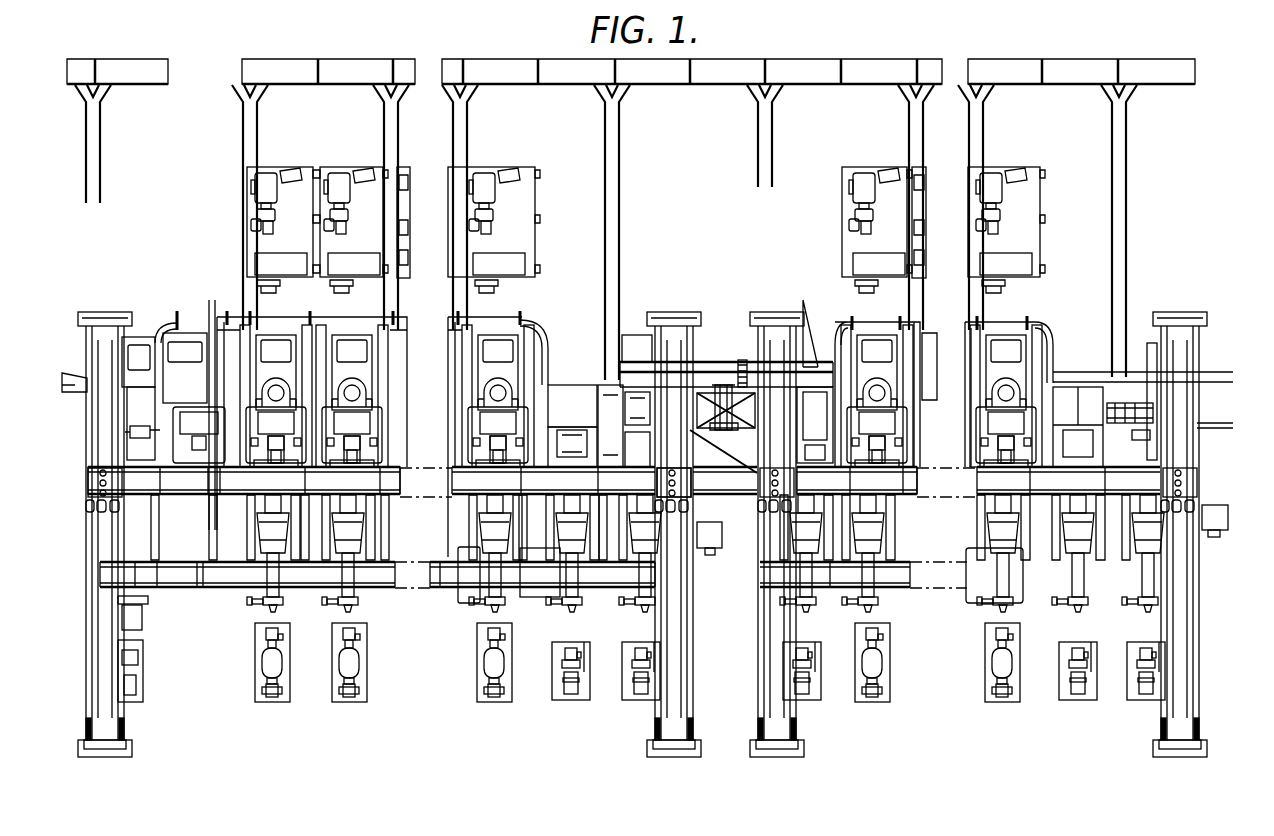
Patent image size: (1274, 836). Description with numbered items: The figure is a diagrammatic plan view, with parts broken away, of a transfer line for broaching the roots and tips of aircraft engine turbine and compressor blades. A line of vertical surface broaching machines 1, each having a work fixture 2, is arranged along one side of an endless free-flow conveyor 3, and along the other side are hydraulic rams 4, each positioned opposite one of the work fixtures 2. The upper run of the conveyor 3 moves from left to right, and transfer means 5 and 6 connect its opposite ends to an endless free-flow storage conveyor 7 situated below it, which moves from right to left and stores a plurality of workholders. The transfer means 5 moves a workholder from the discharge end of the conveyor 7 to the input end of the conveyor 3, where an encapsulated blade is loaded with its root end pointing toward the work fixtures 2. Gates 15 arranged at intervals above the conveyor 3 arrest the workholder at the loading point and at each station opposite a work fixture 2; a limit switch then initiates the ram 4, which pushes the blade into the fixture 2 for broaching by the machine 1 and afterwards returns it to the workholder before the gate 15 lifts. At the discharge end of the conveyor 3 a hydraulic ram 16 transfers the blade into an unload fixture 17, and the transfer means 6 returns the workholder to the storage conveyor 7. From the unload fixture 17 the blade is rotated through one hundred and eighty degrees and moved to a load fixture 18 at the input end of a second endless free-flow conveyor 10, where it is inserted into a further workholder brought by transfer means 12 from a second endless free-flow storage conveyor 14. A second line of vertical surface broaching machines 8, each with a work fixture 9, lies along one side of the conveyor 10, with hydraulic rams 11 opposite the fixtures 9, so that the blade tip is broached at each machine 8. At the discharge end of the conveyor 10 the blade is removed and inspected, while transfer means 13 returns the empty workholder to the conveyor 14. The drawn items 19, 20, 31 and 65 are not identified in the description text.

The vertical surface broaching machine 1 is at (338, 363).
The work fixture 2 is at (338, 457).
The endless free-flow conveyor 3 is at (193, 487).
The hydraulic ram 4 is at (277, 578).
The transfer means 5 is at (88, 481).
The transfer means 6 is at (687, 482).
The endless free-flow storage conveyor 7 is at (218, 577).
The vertical surface broaching machine 8 is at (998, 372).
The work fixture 9 is at (990, 445).
The endless free-flow conveyor 10 is at (844, 489).
The hydraulic ram 11 is at (1003, 540).
The transfer means 12 is at (773, 483).
The transfer means 13 is at (1180, 484).
The endless free-flow storage conveyor 14 is at (847, 577).
The gate 15 is at (155, 483).
The hydraulic ram 16 is at (647, 573).
The unload fixture 17 is at (650, 445).
The load fixture 18 is at (800, 448).
The drive unit 19 is at (650, 405).
The cross beam 20 is at (712, 372).
The column 31 is at (703, 405).
The cylinder 65 is at (740, 387).